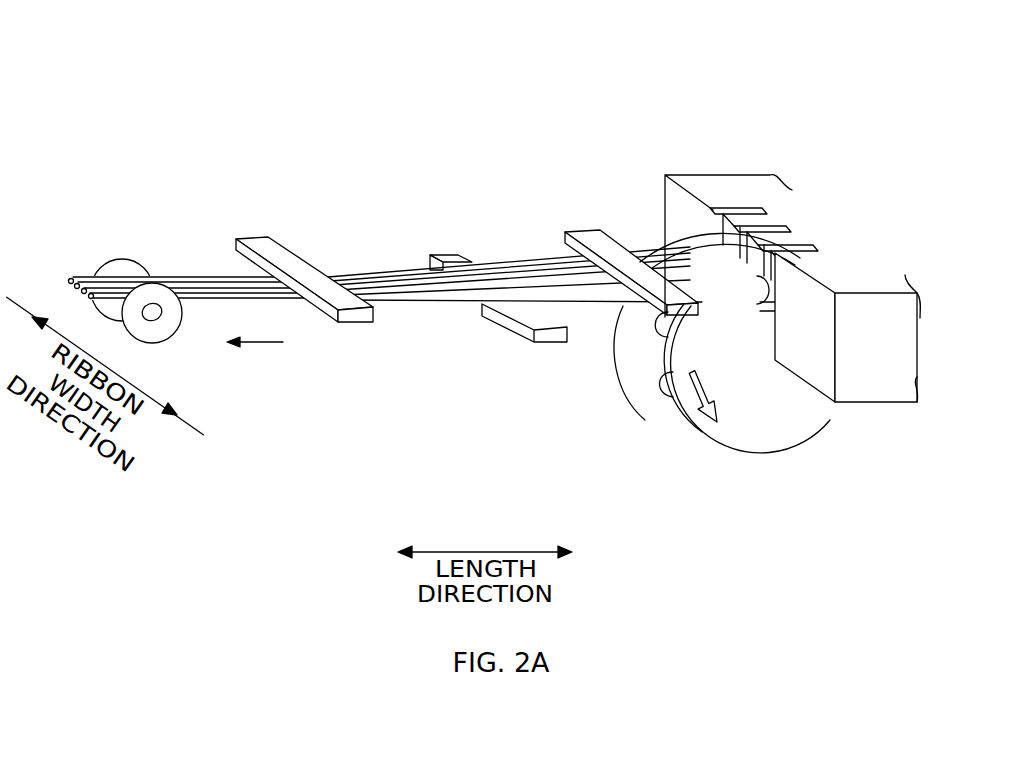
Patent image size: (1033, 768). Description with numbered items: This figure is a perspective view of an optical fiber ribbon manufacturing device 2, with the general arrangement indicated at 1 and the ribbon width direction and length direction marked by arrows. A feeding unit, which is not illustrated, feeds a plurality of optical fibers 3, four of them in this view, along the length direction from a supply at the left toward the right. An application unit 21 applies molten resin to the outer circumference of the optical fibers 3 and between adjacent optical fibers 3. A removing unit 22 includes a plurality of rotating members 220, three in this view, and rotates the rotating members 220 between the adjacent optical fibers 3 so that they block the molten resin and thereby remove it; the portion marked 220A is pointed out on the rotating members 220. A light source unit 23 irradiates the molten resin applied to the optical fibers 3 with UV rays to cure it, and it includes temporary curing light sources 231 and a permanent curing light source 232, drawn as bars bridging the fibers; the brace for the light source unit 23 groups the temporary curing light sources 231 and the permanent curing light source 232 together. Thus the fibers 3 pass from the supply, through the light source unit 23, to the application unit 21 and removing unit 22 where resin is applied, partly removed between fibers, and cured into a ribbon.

The ribbon supply apparatus 1 is at (178, 78).
The manufacturing device 2 is at (582, 105).
The optical fibers 3 is at (74, 283).
The application unit 21 is at (740, 185).
The removing unit 22 is at (680, 443).
The light source unit 23 is at (477, 162).
The rotating members 220 is at (682, 248).
The core 220A is at (742, 280).
The temporary curing light sources 231 is at (573, 232).
The permanent curing light source 232 is at (292, 258).